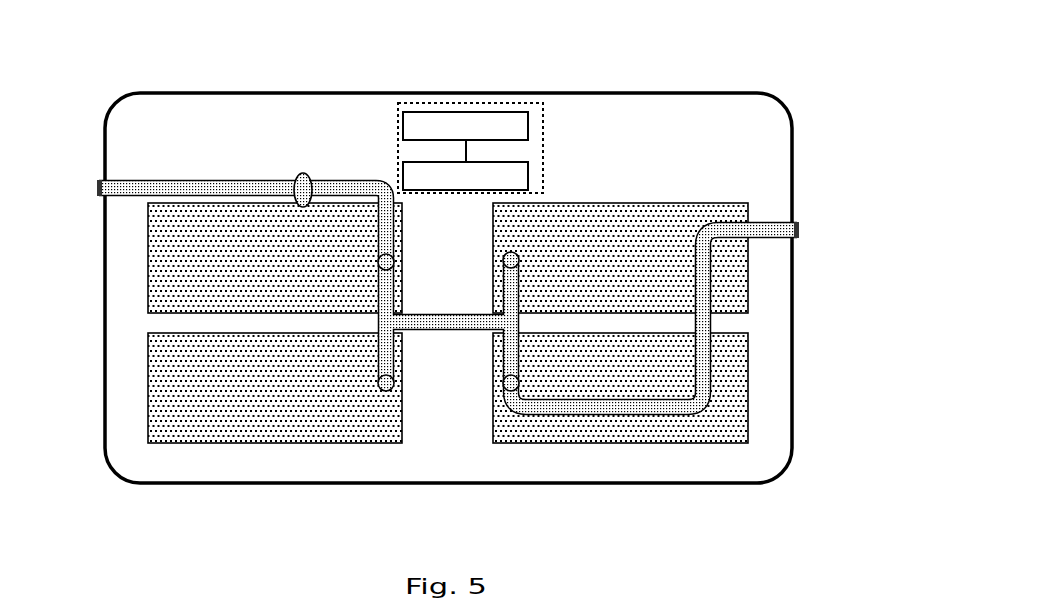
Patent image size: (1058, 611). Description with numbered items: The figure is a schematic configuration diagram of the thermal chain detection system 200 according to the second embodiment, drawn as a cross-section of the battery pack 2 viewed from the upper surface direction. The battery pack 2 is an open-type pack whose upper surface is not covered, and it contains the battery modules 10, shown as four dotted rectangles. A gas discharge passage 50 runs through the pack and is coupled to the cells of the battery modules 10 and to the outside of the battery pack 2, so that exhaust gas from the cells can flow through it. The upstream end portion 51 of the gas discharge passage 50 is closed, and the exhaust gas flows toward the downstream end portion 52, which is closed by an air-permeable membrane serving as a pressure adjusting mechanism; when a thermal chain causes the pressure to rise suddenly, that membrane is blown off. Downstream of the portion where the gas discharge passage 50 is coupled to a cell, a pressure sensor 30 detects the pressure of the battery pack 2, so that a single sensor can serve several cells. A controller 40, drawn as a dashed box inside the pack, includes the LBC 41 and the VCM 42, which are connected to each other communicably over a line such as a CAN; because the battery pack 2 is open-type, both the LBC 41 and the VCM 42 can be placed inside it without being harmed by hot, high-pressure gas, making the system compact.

The thermal chain detection system 200 is at (648, 62).
The battery pack 2 is at (579, 93).
The battery module 10 is at (207, 218).
The pressure sensor 30 is at (297, 175).
The controller 40 is at (398, 102).
The LBC 41 is at (403, 162).
The VCM 42 is at (403, 117).
The gas discharge passage 50 is at (548, 414).
The upstream end portion 51 is at (788, 225).
The downstream end portion 52 is at (100, 184).